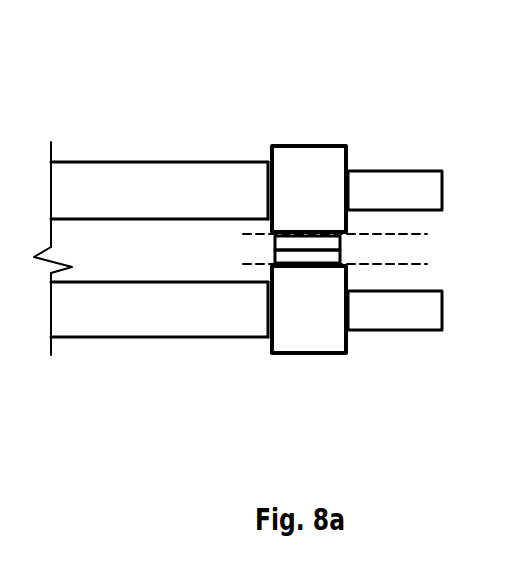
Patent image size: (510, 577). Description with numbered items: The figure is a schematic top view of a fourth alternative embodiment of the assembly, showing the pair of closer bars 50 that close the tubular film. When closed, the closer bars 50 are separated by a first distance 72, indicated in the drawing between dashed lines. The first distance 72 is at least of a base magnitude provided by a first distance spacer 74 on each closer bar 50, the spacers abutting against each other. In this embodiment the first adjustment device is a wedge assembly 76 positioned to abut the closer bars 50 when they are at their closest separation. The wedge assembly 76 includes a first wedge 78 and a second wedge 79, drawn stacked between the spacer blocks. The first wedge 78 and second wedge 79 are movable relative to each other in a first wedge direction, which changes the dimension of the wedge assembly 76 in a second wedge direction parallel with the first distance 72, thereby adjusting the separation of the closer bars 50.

The closer bar 50 is at (151, 218).
The first distance 72 is at (427, 234).
The first distance spacer 74 is at (321, 217).
The wedge assembly 76 is at (401, 221).
The first wedge 78 is at (263, 318).
The second wedge 79 is at (278, 333).